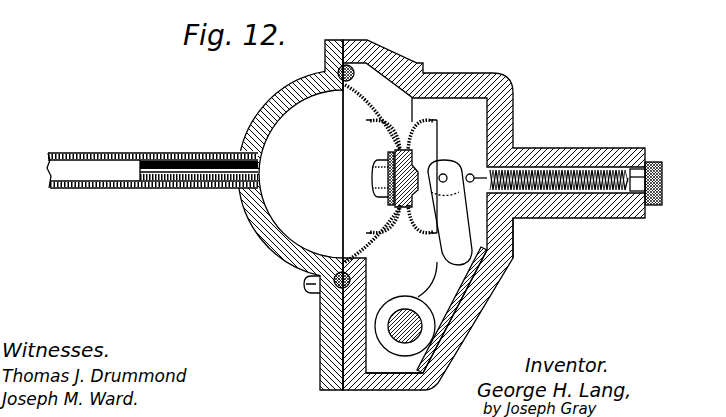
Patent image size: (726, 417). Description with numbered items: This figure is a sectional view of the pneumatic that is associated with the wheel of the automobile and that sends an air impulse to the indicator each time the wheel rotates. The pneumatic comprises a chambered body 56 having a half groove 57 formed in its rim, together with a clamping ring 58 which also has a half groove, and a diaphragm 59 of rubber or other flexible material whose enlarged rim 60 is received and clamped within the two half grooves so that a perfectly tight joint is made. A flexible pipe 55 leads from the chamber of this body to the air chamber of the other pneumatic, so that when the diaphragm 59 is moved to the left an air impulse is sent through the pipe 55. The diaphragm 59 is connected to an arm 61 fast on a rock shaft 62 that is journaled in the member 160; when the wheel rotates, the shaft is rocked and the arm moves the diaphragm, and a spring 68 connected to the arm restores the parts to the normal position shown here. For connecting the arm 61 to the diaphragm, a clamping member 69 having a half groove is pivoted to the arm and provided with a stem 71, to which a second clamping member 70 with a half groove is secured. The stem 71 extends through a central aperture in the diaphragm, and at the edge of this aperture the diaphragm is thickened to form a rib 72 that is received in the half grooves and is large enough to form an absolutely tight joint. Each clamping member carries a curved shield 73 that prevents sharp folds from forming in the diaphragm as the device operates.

The flexible pipe 55 is at (128, 183).
The chambered body 56 is at (240, 223).
The half groove 57 is at (303, 291).
The clamping ring 58 is at (340, 328).
The diaphragm 59 is at (394, 315).
The enlarged rim 60 is at (380, 53).
The arm 61 is at (487, 262).
The rock shaft 62 is at (422, 318).
The spring 68 is at (548, 160).
The clamping member 69 is at (430, 146).
The second clamping member 70 is at (390, 138).
The stem 71 is at (387, 152).
The rib 72 is at (385, 190).
The curved shield 73 is at (380, 218).
The member 160 is at (512, 240).